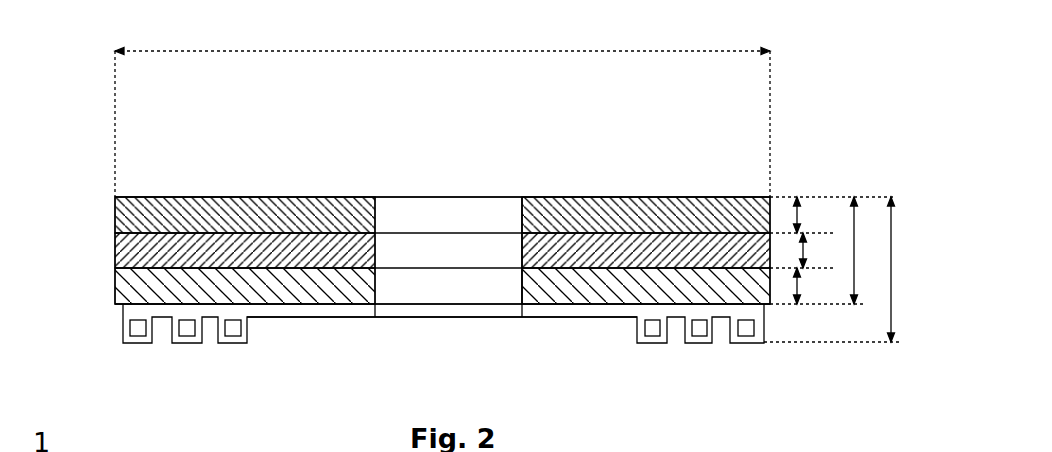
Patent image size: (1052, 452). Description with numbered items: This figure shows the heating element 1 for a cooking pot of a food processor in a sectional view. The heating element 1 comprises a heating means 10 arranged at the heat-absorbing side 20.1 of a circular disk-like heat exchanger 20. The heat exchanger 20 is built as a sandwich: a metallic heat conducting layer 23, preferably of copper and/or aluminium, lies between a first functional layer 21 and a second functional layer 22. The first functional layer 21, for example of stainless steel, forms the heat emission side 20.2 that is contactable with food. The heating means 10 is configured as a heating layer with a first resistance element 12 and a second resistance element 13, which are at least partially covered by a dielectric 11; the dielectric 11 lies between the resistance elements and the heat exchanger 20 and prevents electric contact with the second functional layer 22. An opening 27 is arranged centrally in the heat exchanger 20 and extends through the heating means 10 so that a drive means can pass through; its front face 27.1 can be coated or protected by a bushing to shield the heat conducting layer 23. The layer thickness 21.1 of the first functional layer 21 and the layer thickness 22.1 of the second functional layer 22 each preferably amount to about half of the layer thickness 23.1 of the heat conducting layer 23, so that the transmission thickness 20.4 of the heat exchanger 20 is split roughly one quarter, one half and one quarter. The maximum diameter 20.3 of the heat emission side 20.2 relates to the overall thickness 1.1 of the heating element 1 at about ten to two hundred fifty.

The heating element 1 is at (85, 100).
The overall thickness 1.1 is at (894, 255).
The heating means 10 is at (578, 340).
The dielectric 11 is at (260, 310).
The first resistance element 12 is at (187, 333).
The second resistance element 13 is at (698, 330).
The heat exchanger 20 is at (727, 173).
The heat-absorbing side 20.1 is at (327, 328).
The heat emission side 20.2 is at (237, 182).
The maximum diameter 20.3 is at (513, 51).
The transmission thickness 20.4 is at (855, 250).
The first functional layer 21 is at (147, 225).
The layer thickness of the first functional layer 21.1 is at (806, 216).
The second functional layer 22 is at (143, 293).
The layer thickness of the second functional layer 22.1 is at (798, 290).
The heat conducting layer 23 is at (140, 255).
The layer thickness of the heat conducting layer 23.1 is at (806, 256).
The opening 27 is at (466, 188).
The front face 27.1 is at (503, 256).